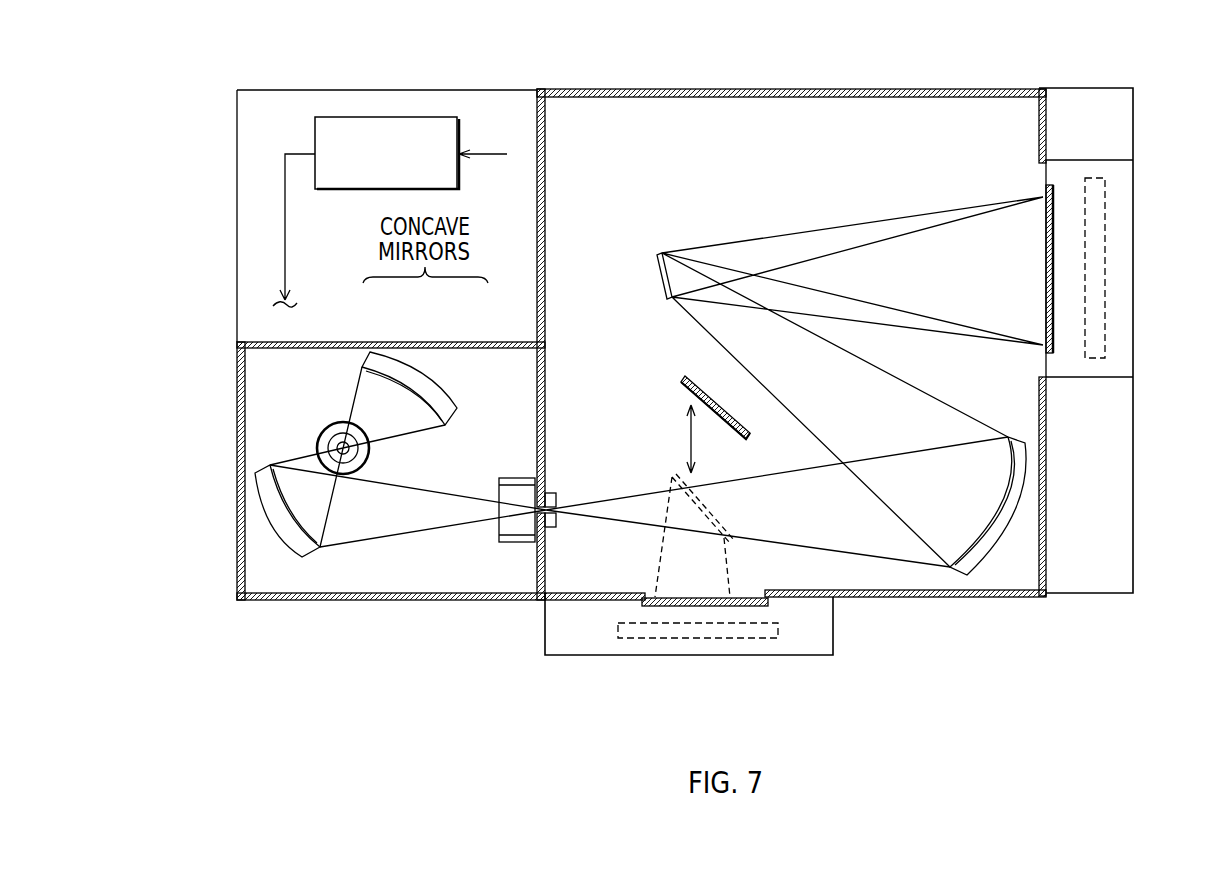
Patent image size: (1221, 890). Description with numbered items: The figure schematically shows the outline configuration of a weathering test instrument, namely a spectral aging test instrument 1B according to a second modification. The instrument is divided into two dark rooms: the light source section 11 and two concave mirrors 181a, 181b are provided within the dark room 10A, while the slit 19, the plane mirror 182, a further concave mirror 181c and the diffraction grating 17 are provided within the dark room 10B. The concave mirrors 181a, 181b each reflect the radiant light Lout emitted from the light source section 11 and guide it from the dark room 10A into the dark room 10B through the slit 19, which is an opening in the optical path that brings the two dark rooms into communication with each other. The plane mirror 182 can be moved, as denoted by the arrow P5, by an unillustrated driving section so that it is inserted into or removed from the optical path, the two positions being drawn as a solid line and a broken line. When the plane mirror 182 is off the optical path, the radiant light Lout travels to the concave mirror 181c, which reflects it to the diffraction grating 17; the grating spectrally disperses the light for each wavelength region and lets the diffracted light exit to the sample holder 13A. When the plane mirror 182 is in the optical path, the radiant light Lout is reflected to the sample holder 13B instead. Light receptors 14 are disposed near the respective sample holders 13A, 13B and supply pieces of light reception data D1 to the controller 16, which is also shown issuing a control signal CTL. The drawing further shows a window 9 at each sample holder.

The spectral aging test instrument 1B is at (1102, 58).
The dark room 10A is at (268, 570).
The dark room 10B is at (596, 114).
The controller 16 is at (387, 117).
The light reception data D1 is at (504, 166).
The control signal CTL is at (285, 218).
The concave mirror 181a is at (271, 453).
The concave mirror 181b is at (421, 362).
The concave mirror 181c is at (980, 550).
The light source section 11 is at (388, 458).
The slit 19 is at (572, 523).
The radiant light Lout is at (384, 519).
The diffraction grating 17 is at (659, 252).
The plane mirror 182 is at (683, 380).
The arrow P5 is at (690, 437).
The sample holder 13A is at (1058, 178).
The sample holder 13B is at (626, 601).
The window 9 is at (1053, 200).
The light receptor 14 is at (1103, 333).